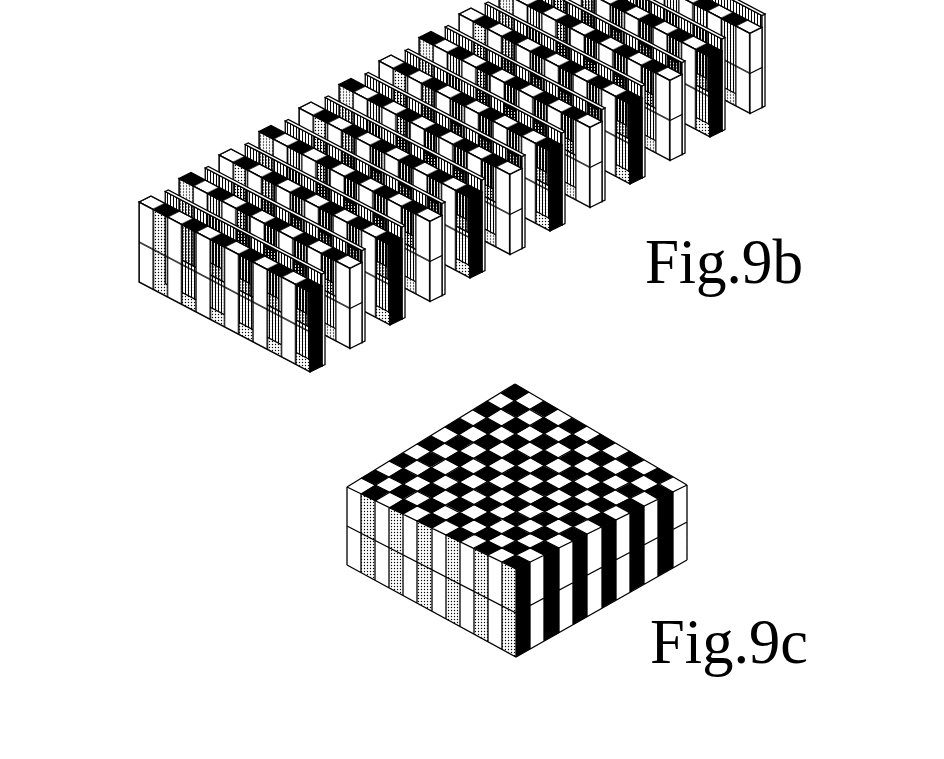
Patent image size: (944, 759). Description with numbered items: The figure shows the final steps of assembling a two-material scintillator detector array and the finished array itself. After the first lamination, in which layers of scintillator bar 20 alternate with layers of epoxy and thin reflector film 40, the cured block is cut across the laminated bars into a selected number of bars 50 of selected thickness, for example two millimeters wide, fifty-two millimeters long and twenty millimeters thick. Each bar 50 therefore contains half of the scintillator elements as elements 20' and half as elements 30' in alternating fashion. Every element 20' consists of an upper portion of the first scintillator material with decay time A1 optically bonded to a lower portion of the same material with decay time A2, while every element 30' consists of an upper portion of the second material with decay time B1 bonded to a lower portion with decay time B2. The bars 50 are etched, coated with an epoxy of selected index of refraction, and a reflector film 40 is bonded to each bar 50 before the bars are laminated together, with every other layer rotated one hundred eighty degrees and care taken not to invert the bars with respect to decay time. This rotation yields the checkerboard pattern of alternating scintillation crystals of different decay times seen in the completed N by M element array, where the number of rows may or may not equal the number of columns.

The scintillator bar 20 is at (242, 5).
The scintillator element 20' is at (192, 313).
The scintillator element 30' is at (217, 304).
The reflector film 40 is at (555, 196).
The bar 50 is at (416, 186).
The decay time A1 is at (146, 222).
The decay time A2 is at (146, 258).
The decay time B1 is at (323, 324).
The decay time B2 is at (307, 373).